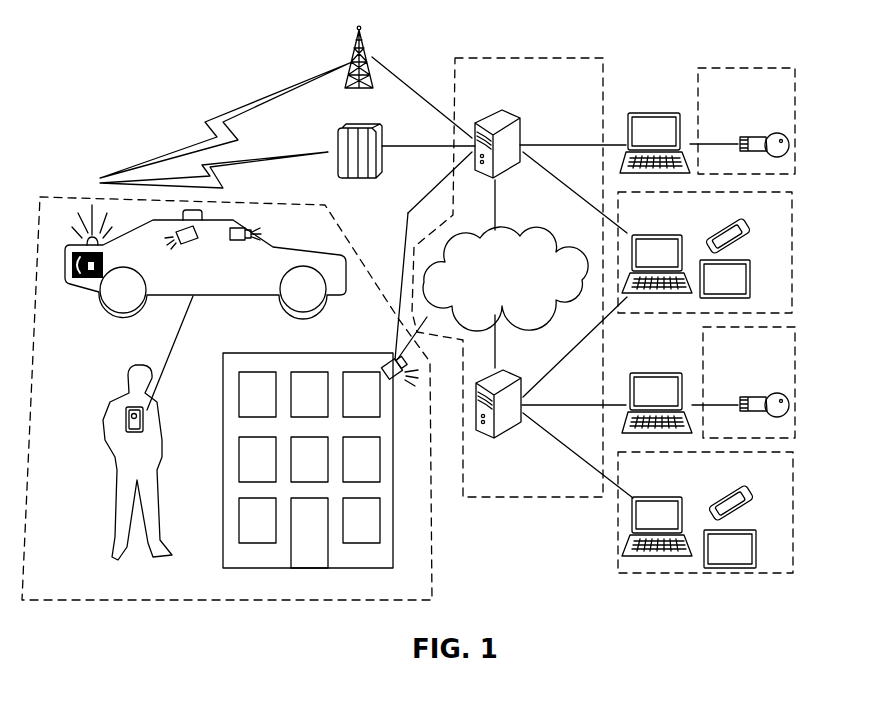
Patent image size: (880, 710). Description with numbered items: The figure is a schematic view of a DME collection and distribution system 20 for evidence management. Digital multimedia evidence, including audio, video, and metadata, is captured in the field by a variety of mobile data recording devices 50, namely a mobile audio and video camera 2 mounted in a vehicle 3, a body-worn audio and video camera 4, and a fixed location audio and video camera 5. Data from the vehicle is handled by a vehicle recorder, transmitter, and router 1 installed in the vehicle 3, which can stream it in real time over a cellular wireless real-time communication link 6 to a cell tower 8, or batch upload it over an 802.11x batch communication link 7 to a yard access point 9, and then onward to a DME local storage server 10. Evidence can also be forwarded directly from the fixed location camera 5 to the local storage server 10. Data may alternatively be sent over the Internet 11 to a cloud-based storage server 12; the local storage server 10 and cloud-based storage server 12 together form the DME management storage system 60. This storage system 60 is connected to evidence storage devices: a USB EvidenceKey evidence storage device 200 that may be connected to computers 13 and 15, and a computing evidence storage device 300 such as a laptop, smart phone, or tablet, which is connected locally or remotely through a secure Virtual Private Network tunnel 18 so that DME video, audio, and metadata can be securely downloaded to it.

The vehicle router 1 is at (83, 280).
The mobile audio and video camera 2 is at (228, 237).
The vehicle 3 is at (217, 298).
The body-worn audio and video camera 4 is at (125, 413).
The fixed location audio and video camera 5 is at (395, 388).
The real-time communication link 6 is at (235, 103).
The batch communication link 7 is at (287, 150).
The cell tower 8 is at (367, 50).
The access point 9 is at (358, 185).
The DME local storage server 10 is at (497, 107).
The Internet 11 is at (514, 228).
The cloud-based storage server 12 is at (490, 444).
The computer 13 is at (653, 110).
The computer 15 is at (653, 370).
The secure Virtual Private Network tunnel 18 is at (547, 143).
The DME collection and distribution system 20 is at (305, 632).
The mobile data recording devices 50 is at (432, 515).
The DME management storage system 60 is at (522, 57).
The evidence storage device 200 is at (717, 65).
The computing evidence storage device 300 is at (793, 248).